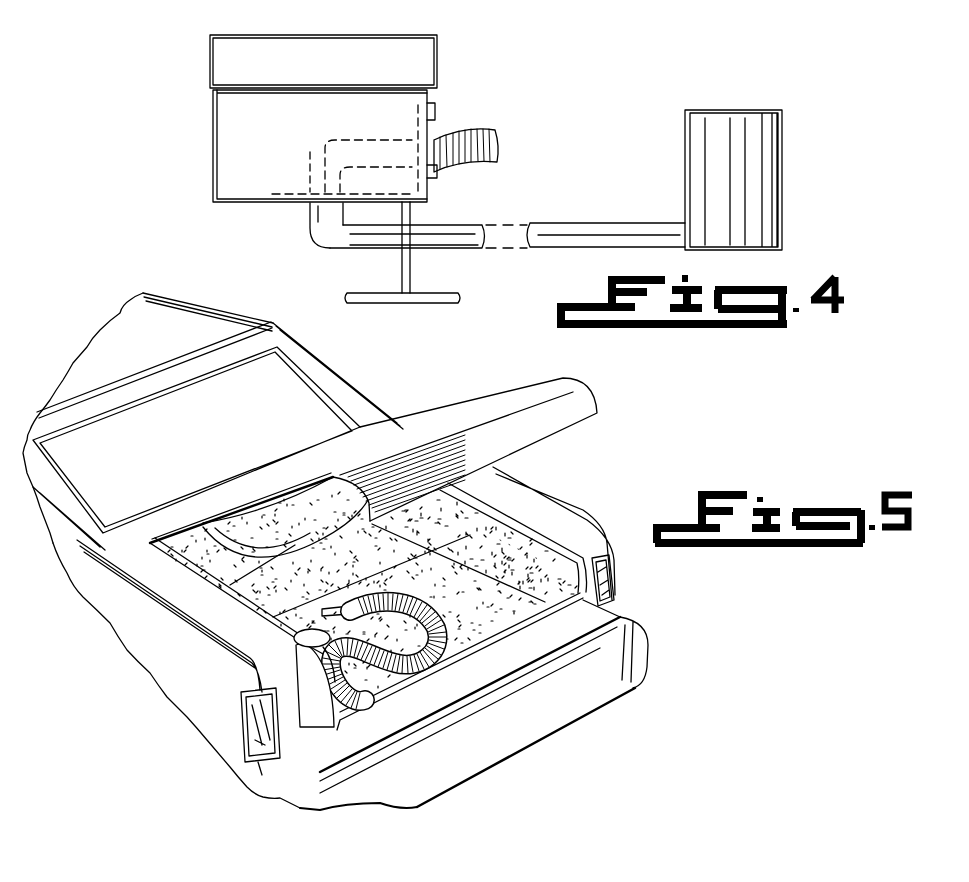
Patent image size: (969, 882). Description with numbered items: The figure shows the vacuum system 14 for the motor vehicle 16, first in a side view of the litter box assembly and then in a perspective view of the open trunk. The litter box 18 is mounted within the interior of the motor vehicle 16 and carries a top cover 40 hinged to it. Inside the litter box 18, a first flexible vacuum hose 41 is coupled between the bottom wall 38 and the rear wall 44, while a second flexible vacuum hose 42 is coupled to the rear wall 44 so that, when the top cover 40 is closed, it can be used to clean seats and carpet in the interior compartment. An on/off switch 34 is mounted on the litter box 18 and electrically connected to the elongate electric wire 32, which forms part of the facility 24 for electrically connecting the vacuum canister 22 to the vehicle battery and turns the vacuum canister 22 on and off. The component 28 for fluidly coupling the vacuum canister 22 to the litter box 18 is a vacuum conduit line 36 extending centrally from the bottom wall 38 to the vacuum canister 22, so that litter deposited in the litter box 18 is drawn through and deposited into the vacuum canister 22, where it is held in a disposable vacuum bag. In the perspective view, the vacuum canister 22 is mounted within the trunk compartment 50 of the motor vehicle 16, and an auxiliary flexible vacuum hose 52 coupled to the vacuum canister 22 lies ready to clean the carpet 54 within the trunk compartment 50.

In FIG. 4, the vacuum system 14 is at (594, 127).
In FIG. 5, the vacuum system 14 is at (432, 690).
In FIG. 5, the motor vehicle 16 is at (171, 292).
In FIG. 4, the litter box 18 is at (212, 157).
In FIG. 4, the vacuum canister 22 is at (735, 130).
In FIG. 5, the vacuum canister 22 is at (311, 641).
In FIG. 4, the facility for electrically connecting 24 is at (417, 306).
In FIG. 4, the component for fluidly coupling 28 is at (580, 222).
In FIG. 4, the elongate electric wire 32 is at (366, 292).
In FIG. 4, the on/off switch 34 is at (436, 110).
In FIG. 4, the vacuum conduit line 36 is at (452, 221).
In FIG. 4, the bottom wall 38 is at (258, 208).
In FIG. 4, the top cover 40 is at (226, 66).
In FIG. 4, the first flexible vacuum hose 41 is at (310, 152).
In FIG. 4, the second flexible vacuum hose 42 is at (473, 131).
In FIG. 4, the rear wall 44 is at (423, 128).
In FIG. 5, the trunk compartment 50 is at (480, 518).
In FIG. 5, the auxiliary flexible vacuum hose 52 is at (398, 603).
In FIG. 5, the carpet 54 is at (533, 550).